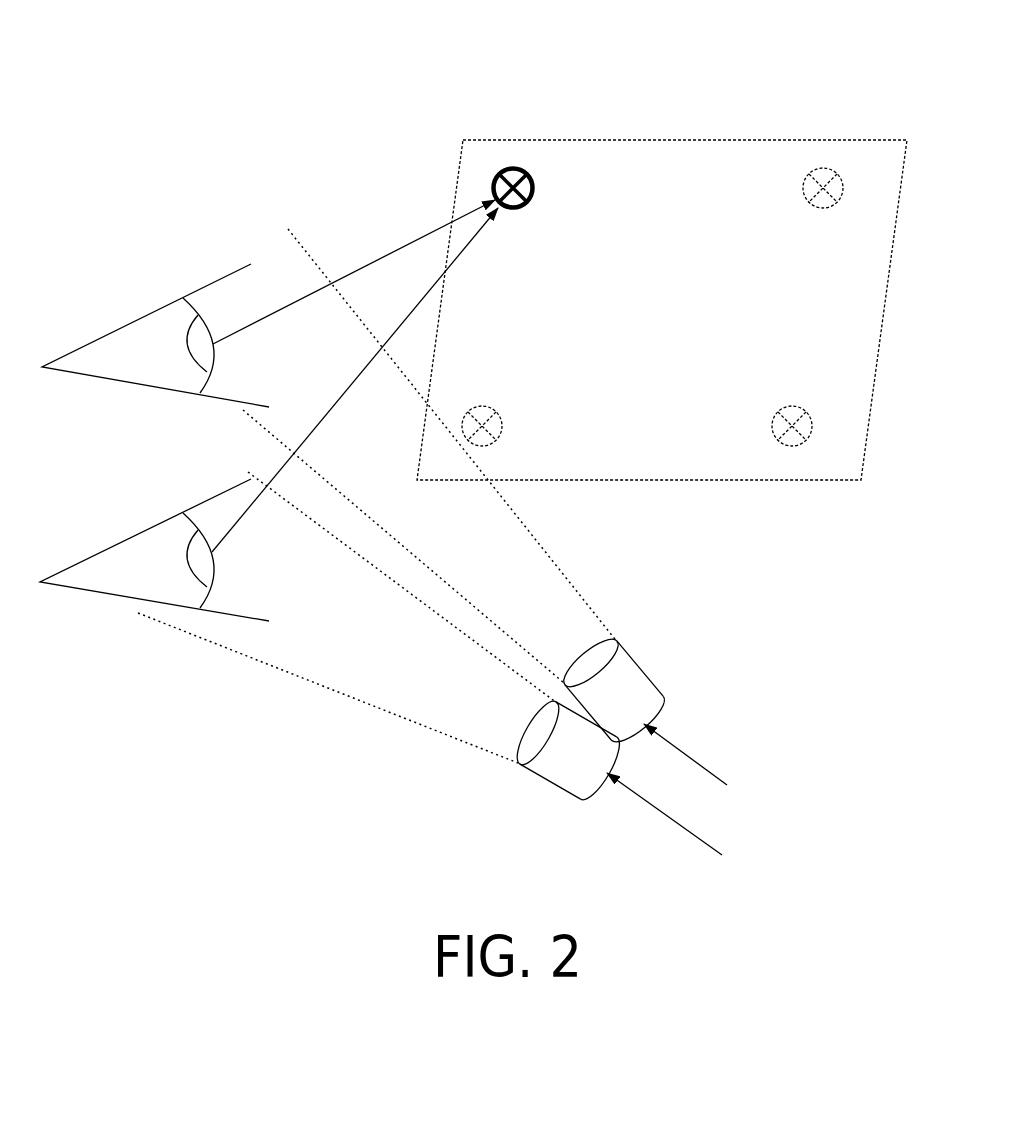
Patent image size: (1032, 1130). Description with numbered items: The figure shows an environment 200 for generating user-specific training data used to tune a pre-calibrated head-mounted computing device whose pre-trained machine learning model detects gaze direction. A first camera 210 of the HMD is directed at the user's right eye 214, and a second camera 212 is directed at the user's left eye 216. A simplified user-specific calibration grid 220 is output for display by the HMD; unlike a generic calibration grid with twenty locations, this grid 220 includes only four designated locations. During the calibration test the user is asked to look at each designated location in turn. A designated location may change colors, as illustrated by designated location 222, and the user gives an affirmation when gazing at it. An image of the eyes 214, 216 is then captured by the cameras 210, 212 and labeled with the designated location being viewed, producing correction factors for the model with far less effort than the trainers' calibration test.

The environment 200 is at (767, 78).
The first camera 210 is at (642, 665).
The second camera 212 is at (558, 787).
The right eye 214 is at (98, 382).
The left eye 216 is at (90, 593).
The simplified user-specific calibration grid 220 is at (462, 156).
The designated location 222 is at (522, 207).